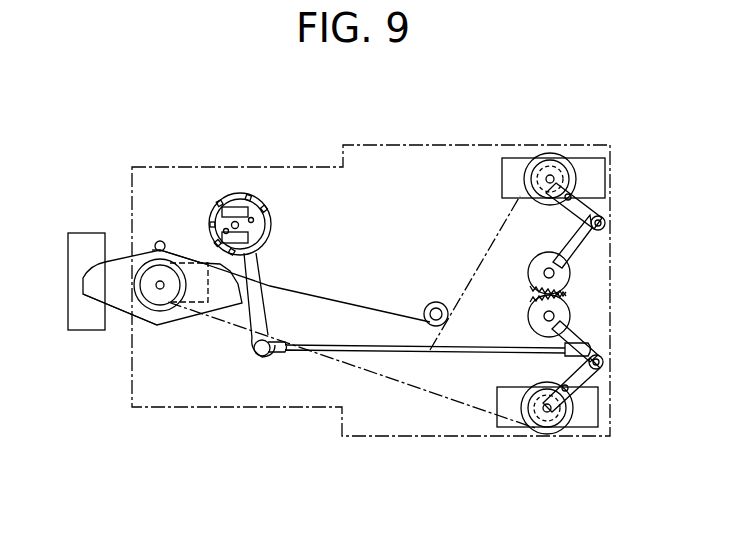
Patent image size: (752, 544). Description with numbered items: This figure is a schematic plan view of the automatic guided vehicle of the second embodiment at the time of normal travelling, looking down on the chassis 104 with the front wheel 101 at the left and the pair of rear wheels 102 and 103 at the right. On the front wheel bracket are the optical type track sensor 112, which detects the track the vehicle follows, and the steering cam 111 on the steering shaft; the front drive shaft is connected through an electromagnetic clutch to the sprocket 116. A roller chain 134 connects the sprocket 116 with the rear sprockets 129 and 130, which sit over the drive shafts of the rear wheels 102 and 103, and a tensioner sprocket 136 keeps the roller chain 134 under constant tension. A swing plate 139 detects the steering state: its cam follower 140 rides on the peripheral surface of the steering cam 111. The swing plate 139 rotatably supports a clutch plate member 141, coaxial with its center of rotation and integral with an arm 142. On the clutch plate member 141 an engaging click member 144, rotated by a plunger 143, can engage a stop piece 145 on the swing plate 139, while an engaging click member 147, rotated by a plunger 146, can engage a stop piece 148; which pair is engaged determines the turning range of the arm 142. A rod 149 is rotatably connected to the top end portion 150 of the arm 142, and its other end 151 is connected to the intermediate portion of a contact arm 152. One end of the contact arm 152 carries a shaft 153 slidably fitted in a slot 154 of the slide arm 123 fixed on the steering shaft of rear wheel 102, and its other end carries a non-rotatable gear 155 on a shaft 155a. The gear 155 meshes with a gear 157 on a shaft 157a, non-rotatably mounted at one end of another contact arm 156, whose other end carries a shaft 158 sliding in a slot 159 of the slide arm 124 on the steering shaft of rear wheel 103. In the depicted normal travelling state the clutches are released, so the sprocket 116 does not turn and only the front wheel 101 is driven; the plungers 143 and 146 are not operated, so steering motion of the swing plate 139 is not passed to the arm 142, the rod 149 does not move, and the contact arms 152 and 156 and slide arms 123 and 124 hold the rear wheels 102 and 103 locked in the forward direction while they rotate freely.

The front wheel 101 is at (125, 318).
The rear wheel 102 is at (598, 428).
The rear wheel 103 is at (590, 160).
The chassis 104 is at (437, 145).
The steering cam 111 is at (147, 313).
The optical type track sensor 112 is at (68, 250).
The sprocket 116 is at (172, 300).
The slide arm 123 is at (557, 394).
The slide arm 124 is at (583, 213).
The sprocket 129 is at (548, 434).
The sprocket 130 is at (551, 174).
The roller chain 134 is at (350, 305).
The sprocket 136 is at (436, 302).
The swing plate 139 is at (158, 241).
The cam follower 140 is at (152, 251).
The clutch plate member 141 is at (253, 193).
The arm 142 is at (268, 322).
The plunger 143 is at (236, 208).
The engaging click member 144 is at (211, 213).
The stop piece 145 is at (178, 238).
The plunger 146 is at (256, 265).
The engaging click member 147 is at (272, 228).
The stop piece 148 is at (271, 214).
The rod 149 is at (387, 354).
The top end portion 150 is at (264, 356).
The other end 151 is at (592, 351).
The contact arm 152 is at (585, 334).
The shaft 153 is at (600, 368).
The slot 154 is at (585, 378).
The gear 155 is at (530, 306).
The shaft 155a is at (554, 316).
The contact arm 156 is at (585, 247).
The gear 157 is at (530, 262).
The shaft 157a is at (554, 274).
The shaft 158 is at (606, 226).
The slot 159 is at (575, 200).